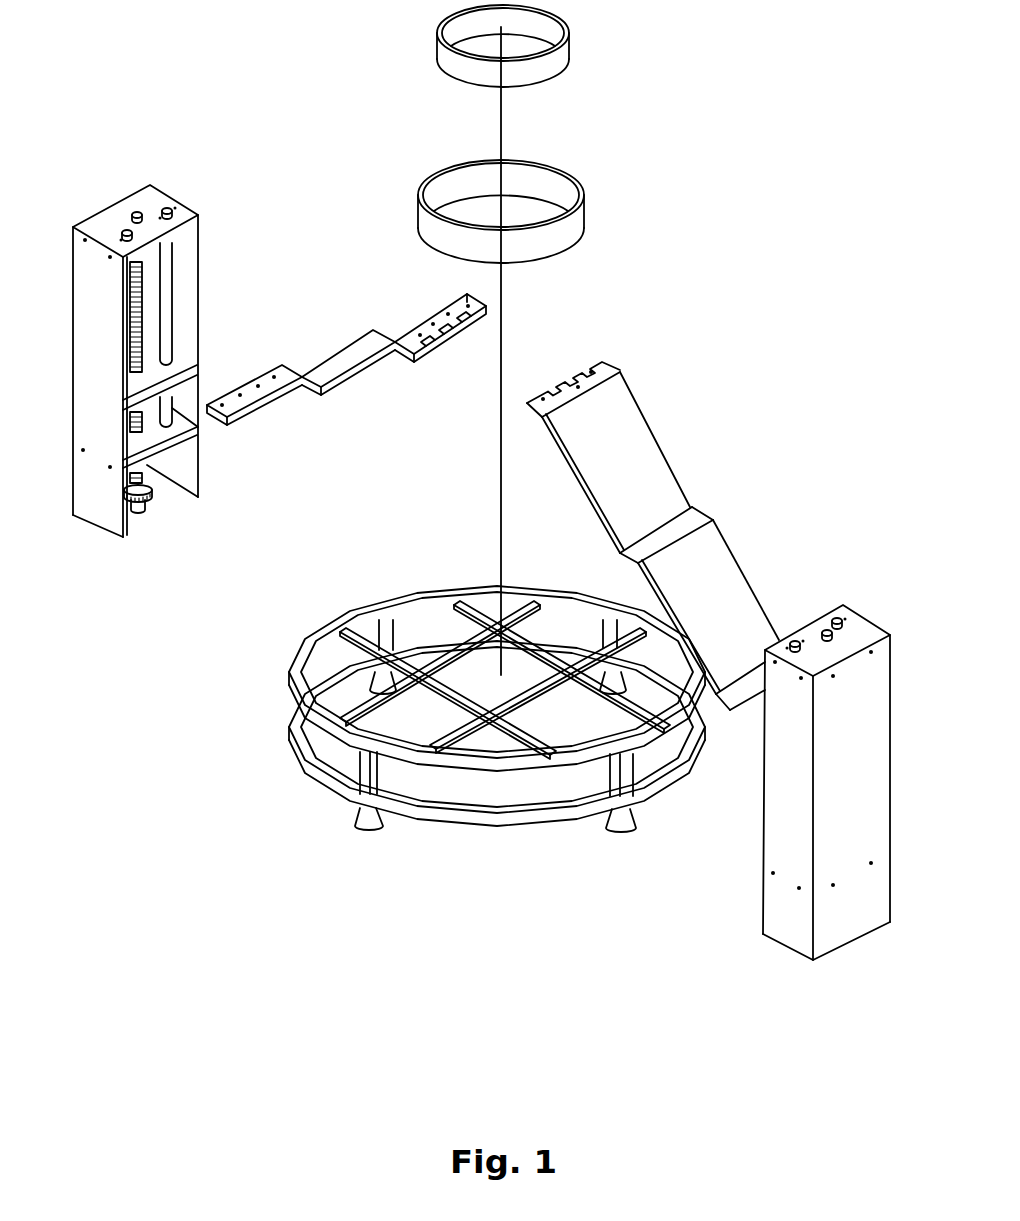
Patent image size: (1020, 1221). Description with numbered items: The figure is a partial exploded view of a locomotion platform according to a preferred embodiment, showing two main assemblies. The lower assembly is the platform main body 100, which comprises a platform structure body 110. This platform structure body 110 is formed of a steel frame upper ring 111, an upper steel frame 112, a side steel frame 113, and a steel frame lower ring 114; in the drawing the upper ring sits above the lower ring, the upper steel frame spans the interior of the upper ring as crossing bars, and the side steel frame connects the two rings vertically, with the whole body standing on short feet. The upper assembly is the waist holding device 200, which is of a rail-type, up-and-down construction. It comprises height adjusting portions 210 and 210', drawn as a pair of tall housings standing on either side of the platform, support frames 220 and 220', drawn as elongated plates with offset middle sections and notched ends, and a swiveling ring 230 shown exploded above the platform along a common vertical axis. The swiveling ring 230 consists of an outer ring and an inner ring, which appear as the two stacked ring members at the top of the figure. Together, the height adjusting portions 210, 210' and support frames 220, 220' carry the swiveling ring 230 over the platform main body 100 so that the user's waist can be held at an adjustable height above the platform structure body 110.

The platform main body 100 is at (232, 733).
The platform structure body 110 is at (433, 730).
The steel frame upper ring 111 is at (300, 650).
The upper steel frame 112 is at (447, 653).
The side steel frame 113 is at (610, 788).
The steel frame lower ring 114 is at (480, 820).
The waist holding device 200 is at (697, 227).
The height adjusting portion 210 is at (161, 327).
The height adjusting portion 210' is at (826, 717).
The support frame 220 is at (346, 341).
The support frame 220' is at (653, 536).
The swiveling ring 230 is at (588, 177).